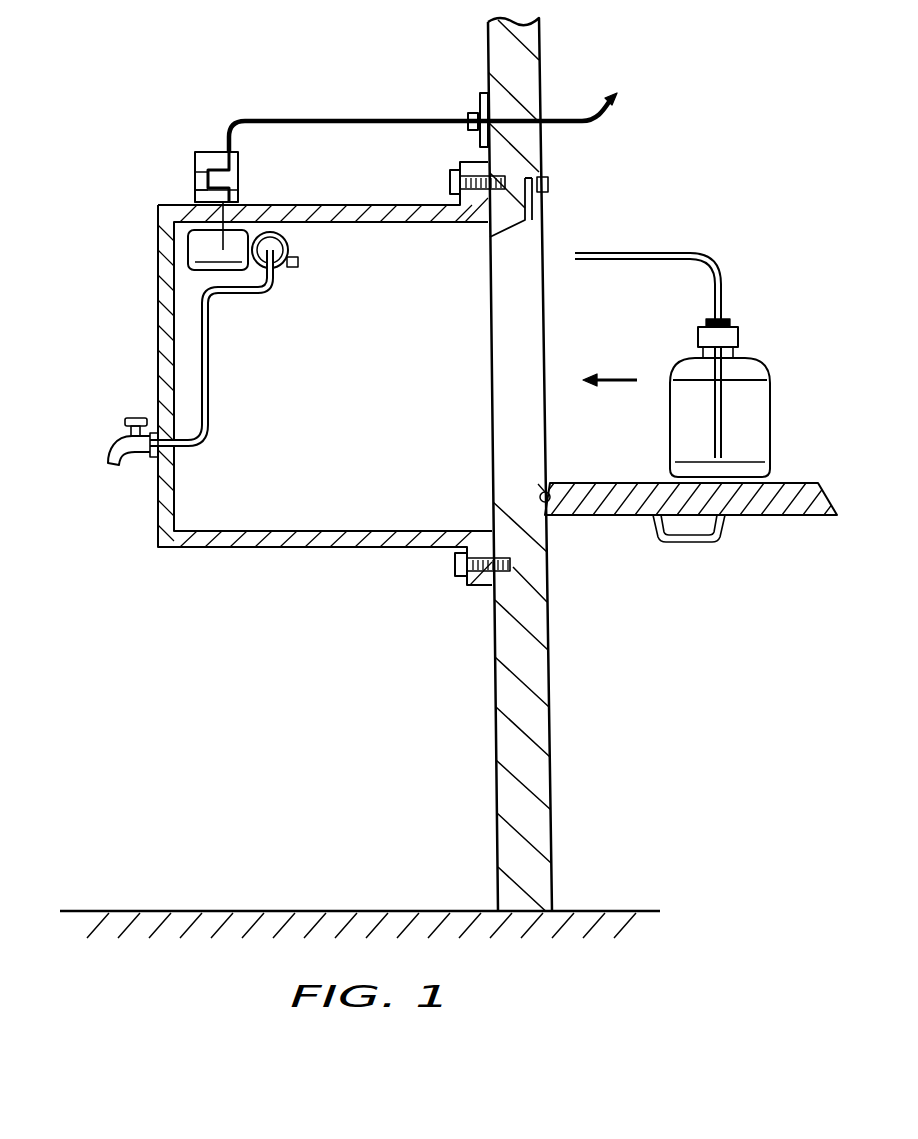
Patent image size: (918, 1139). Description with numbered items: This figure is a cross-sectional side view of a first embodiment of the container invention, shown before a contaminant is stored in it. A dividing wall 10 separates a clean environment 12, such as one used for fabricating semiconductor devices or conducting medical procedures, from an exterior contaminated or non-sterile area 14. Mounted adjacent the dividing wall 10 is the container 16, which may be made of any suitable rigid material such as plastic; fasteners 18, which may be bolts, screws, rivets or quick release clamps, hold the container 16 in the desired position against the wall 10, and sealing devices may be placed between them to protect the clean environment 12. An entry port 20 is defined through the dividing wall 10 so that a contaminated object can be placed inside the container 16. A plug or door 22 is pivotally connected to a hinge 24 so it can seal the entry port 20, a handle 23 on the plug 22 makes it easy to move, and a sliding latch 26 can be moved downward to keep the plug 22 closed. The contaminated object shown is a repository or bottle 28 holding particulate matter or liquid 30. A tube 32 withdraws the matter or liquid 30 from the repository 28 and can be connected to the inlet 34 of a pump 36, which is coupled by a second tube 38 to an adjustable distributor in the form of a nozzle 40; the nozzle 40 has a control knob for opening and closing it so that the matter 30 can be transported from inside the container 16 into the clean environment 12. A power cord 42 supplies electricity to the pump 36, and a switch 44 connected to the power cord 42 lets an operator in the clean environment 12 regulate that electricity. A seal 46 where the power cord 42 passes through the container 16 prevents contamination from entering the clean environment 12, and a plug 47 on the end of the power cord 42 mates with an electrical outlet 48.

The dividing wall 10 is at (544, 55).
The clean environment 12 is at (225, 70).
The exterior contaminated or non-sterile area 14 is at (763, 72).
The container 16 is at (130, 336).
The fasteners 18 is at (450, 180).
The entry port 20 is at (557, 334).
The plug or door 22 is at (600, 517).
The handle 23 is at (720, 541).
The hinge 24 is at (540, 500).
The sliding latch 26 is at (549, 182).
The repository or bottle 28 is at (771, 427).
The particulate matter or liquid 30 is at (752, 403).
The tube 32 is at (648, 252).
The inlet 34 is at (300, 263).
The pump 36 is at (189, 250).
The second tube 38 is at (212, 373).
The nozzle 40 is at (118, 452).
The power cord 42 is at (313, 119).
The switch 44 is at (196, 170).
The seal 46 is at (240, 196).
The plug 47 is at (468, 118).
The electrical outlet 48 is at (482, 108).